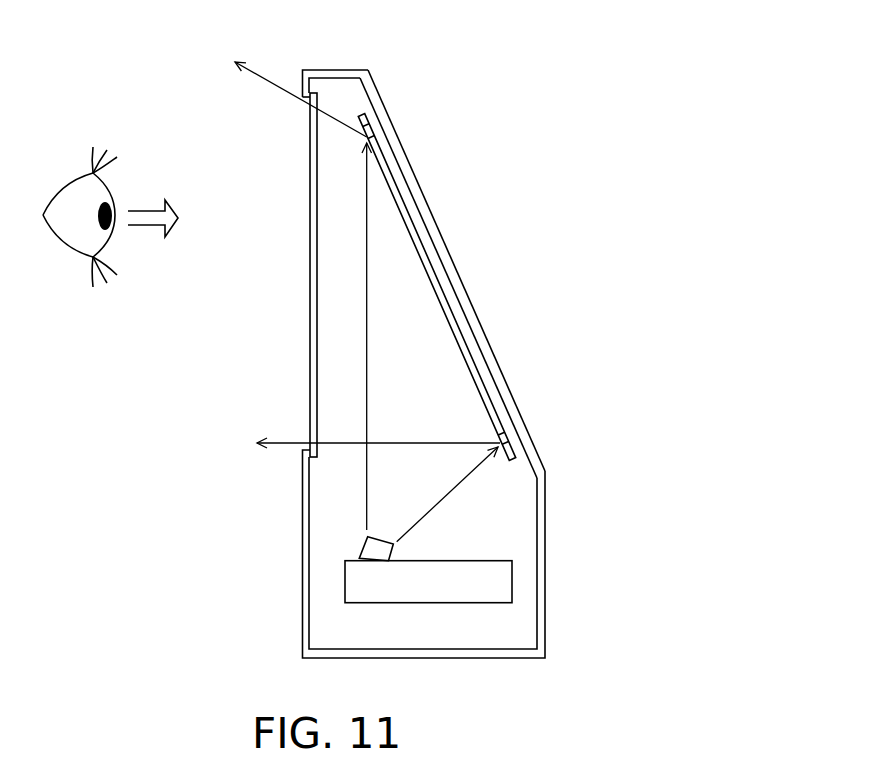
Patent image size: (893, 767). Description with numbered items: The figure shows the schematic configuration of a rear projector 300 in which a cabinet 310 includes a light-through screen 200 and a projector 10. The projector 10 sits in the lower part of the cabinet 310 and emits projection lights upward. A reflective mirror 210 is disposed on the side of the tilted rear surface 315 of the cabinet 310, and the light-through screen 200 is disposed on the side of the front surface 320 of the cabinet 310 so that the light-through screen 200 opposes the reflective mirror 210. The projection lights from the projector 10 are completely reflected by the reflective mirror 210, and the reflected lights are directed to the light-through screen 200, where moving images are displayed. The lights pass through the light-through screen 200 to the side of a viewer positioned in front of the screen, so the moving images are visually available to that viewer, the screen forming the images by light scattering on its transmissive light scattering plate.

The rear projector 300 is at (531, 149).
The cabinet 310 is at (345, 70).
The tilted rear surface 315 is at (445, 250).
The front surface 320 is at (305, 483).
The light-through screen 200 is at (307, 189).
The reflective mirror 210 is at (448, 346).
The projector 10 is at (458, 585).